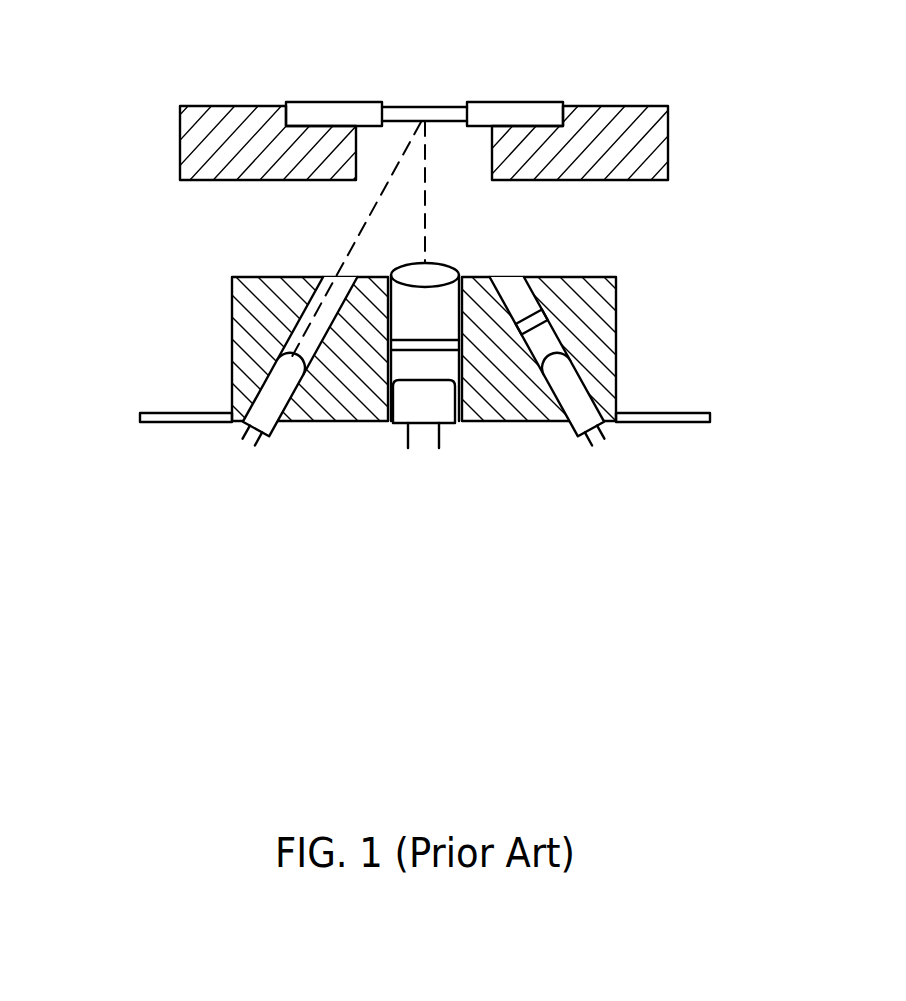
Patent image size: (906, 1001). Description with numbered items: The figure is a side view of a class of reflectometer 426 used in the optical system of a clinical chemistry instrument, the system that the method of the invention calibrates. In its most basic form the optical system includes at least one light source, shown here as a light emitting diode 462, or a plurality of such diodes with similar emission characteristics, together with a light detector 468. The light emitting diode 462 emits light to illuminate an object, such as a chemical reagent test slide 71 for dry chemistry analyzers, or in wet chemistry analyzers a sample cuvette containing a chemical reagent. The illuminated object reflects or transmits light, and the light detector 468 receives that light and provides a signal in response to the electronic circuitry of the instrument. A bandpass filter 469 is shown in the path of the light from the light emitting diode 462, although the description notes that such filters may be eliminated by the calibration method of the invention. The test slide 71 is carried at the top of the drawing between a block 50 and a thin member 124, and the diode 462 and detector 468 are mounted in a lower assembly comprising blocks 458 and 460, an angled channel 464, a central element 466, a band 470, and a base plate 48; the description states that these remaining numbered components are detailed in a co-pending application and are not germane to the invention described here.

The base plate 48 is at (174, 418).
The upper block 50 is at (613, 106).
The chemical reagent test slide 71 is at (328, 103).
The thin bar / wire 124 is at (401, 108).
The prior art assembly 426 is at (545, 478).
The left housing block 458 is at (233, 322).
The right housing block 460 is at (518, 291).
The light emitting diode 462 is at (280, 397).
The angled channel 464 is at (353, 292).
The central cylinder 466 is at (446, 279).
The light detector 468 is at (405, 404).
The bandpass filter 469 is at (537, 318).
The separator band 470 is at (456, 345).